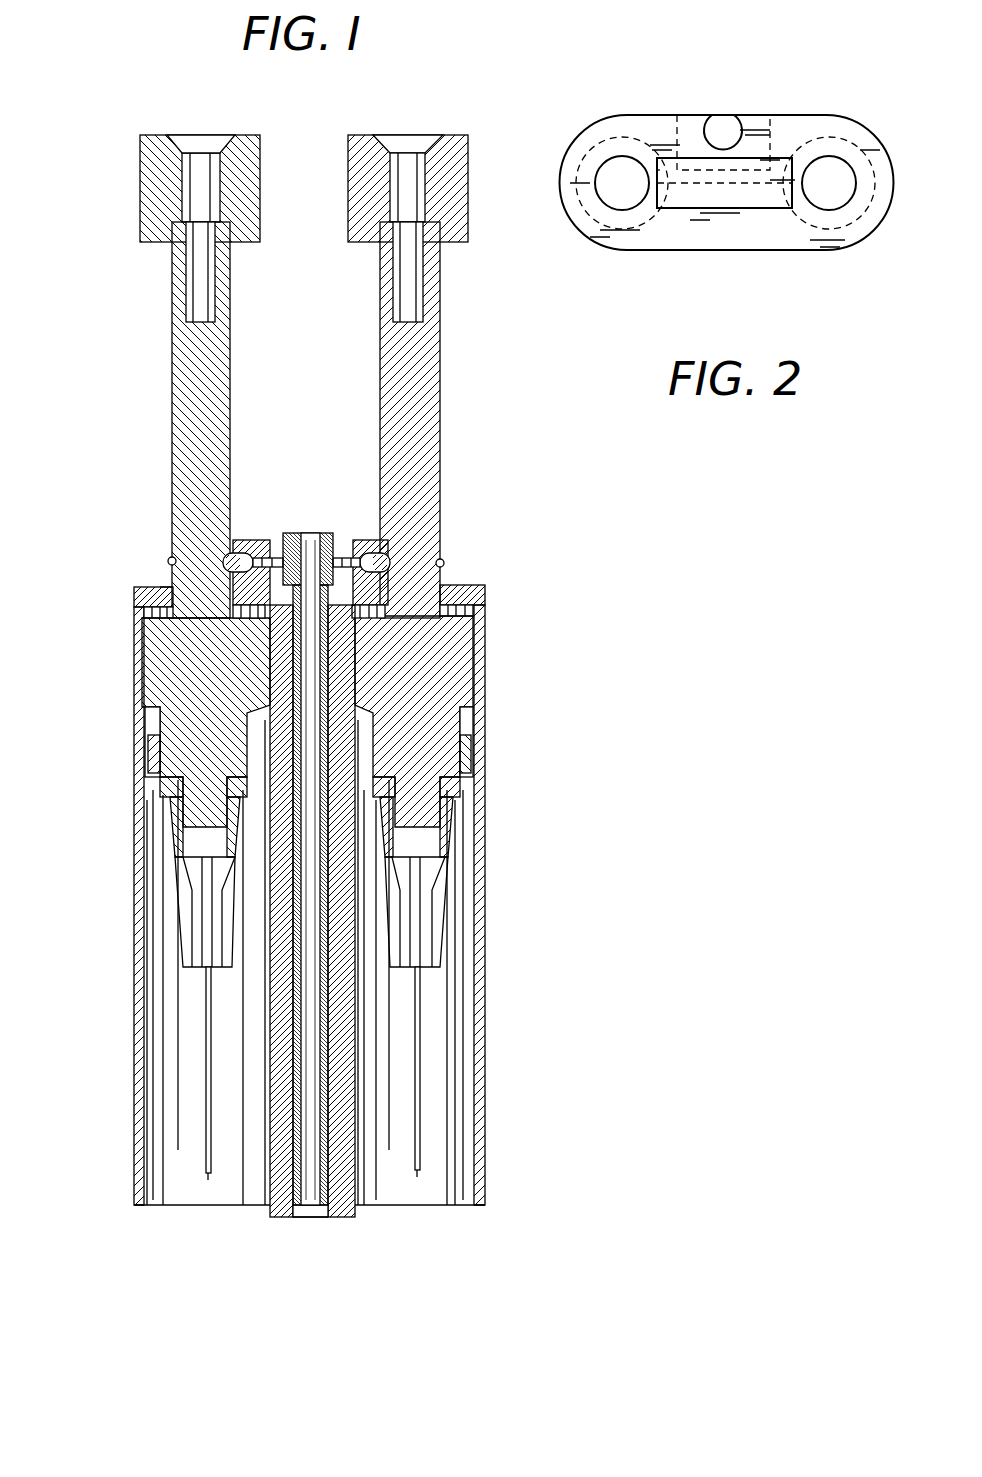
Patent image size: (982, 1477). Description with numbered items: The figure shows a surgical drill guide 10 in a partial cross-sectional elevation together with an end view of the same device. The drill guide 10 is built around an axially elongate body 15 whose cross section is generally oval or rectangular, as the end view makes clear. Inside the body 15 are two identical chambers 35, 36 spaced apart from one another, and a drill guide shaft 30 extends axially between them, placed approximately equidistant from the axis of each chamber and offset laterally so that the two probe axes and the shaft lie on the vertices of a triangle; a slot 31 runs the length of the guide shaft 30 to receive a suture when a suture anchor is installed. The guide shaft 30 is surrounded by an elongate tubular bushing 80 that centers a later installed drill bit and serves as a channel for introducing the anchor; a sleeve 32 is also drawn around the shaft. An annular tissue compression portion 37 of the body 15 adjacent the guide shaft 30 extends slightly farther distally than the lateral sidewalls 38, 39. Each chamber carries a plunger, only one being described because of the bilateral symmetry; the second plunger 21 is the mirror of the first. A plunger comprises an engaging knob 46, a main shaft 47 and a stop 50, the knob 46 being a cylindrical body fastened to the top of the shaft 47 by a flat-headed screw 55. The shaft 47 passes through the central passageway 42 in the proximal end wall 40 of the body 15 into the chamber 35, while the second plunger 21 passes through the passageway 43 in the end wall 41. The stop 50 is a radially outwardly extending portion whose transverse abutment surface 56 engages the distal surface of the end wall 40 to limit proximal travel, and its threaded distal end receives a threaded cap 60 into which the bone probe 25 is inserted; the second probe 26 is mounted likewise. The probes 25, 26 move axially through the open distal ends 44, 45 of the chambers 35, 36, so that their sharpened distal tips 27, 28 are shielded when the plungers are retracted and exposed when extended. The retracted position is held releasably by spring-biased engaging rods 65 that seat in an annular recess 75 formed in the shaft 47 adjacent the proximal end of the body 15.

In FIG. 1, the surgical drill guide 10 is at (545, 685).
In FIG. 1, the body 15 is at (134, 720).
In FIG. 2, the body 15 is at (697, 252).
In FIG. 1, the plunger 21 is at (440, 455).
In FIG. 1, the bone probe 25 is at (207, 1033).
In FIG. 1, the bone probe 26 is at (420, 1118).
In FIG. 1, the sharpened distal tip 27 is at (212, 1180).
In FIG. 1, the sharpened distal tip 28 is at (417, 1175).
In FIG. 1, the drill guide shaft 30 is at (318, 526).
In FIG. 2, the drill guide shaft 30 is at (728, 143).
In FIG. 2, the slot 31 is at (722, 113).
In FIG. 1, the sleeve 32 is at (380, 540).
In FIG. 1, the chamber 35 is at (173, 1080).
In FIG. 1, the chamber 36 is at (458, 1068).
In FIG. 1, the annular tissue compression portion 37 is at (345, 1218).
In FIG. 1, the lateral sidewall 38 is at (136, 1207).
In FIG. 1, the lateral sidewall 39 is at (487, 1204).
In FIG. 1, the end wall 40 is at (135, 588).
In FIG. 1, the end wall 41 is at (467, 583).
In FIG. 1, the central passageway 42 is at (170, 587).
In FIG. 1, the central passageway 43 is at (443, 575).
In FIG. 1, the distal end of chamber 44 is at (233, 1240).
In FIG. 1, the distal end of chamber 45 is at (410, 1242).
In FIG. 1, the engaging knob 46 is at (140, 190).
In FIG. 1, the main shaft 47 is at (197, 362).
In FIG. 1, the stop 50 is at (157, 652).
In FIG. 1, the screw 55 is at (197, 143).
In FIG. 1, the transverse abutment surface 56 is at (150, 612).
In FIG. 1, the threaded cap 60 is at (165, 797).
In FIG. 1, the engaging rod 65 is at (253, 540).
In FIG. 1, the annular recess 75 is at (172, 560).
In FIG. 1, the tubular bushing 80 is at (341, 540).